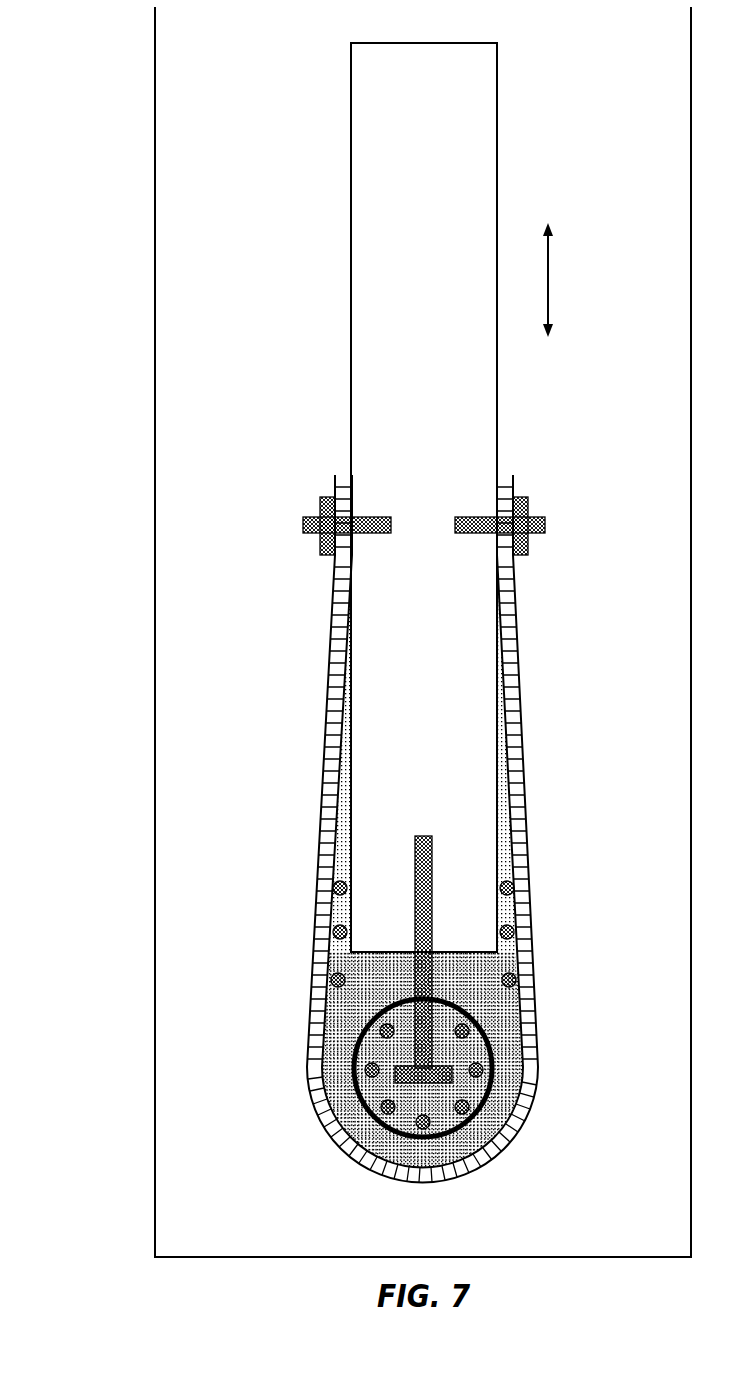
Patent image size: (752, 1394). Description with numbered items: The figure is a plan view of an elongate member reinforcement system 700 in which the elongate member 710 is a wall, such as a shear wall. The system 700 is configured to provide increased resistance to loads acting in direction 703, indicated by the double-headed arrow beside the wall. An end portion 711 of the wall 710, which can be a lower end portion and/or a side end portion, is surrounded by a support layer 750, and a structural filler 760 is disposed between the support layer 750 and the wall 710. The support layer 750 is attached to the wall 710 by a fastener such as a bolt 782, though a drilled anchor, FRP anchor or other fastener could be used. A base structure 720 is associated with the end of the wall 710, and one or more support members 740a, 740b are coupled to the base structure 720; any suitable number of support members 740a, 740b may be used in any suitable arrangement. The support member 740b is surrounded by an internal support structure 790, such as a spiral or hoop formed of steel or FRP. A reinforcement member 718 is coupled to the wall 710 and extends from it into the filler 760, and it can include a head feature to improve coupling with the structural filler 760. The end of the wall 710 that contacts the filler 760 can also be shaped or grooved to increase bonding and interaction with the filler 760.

The elongate member reinforcement system 700 is at (136, 100).
The direction 703 is at (548, 288).
The elongate member 710 is at (351, 192).
The end portion 711 is at (292, 740).
The reinforcement member 718 is at (432, 1064).
The base structure 720 is at (292, 637).
The support member 740a is at (331, 980).
The support member 740b is at (385, 1112).
The support layer 750 is at (310, 1060).
The structural filler 760 is at (487, 984).
The bolt 782 is at (322, 497).
The internal support structure 790 is at (483, 1115).